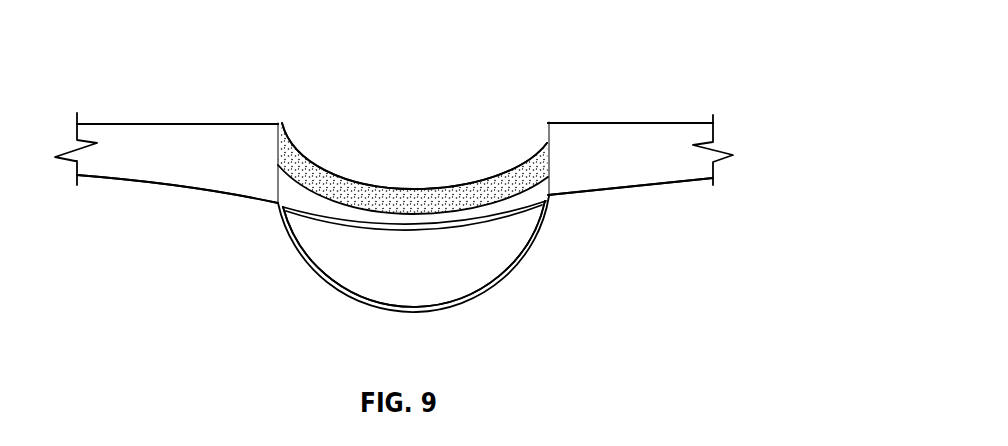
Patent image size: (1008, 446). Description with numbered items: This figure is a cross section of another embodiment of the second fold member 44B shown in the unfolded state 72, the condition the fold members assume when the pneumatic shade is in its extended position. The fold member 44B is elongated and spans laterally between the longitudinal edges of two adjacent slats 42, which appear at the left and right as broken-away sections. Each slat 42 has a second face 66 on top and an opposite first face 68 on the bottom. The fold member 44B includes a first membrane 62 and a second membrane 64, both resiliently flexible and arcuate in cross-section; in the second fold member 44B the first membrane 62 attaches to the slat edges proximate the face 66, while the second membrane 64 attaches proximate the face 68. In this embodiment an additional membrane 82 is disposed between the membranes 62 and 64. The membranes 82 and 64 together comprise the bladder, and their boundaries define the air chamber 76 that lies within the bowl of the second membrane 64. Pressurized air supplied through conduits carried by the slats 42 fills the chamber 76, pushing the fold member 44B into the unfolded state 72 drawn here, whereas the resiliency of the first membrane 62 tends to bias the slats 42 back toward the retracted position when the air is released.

The slat 42 is at (672, 102).
The second fold member 44B is at (486, 72).
The first membrane 62 is at (417, 187).
The second membrane 64 is at (483, 292).
The second face 66 is at (178, 123).
The first face 68 is at (122, 180).
The unfolded state 72 is at (373, 101).
The air chamber 76 is at (430, 292).
The additional membrane 82 is at (455, 225).